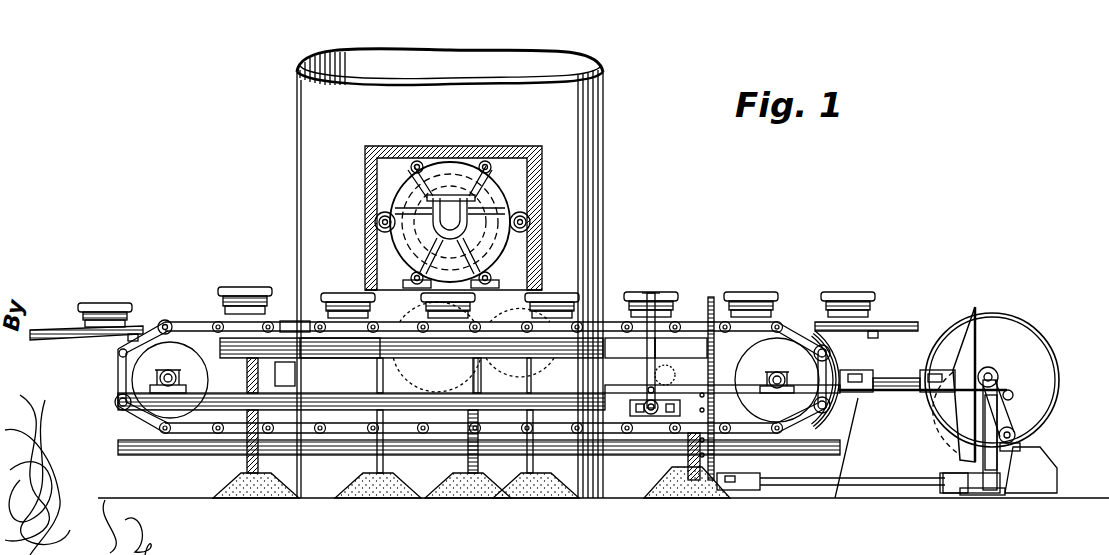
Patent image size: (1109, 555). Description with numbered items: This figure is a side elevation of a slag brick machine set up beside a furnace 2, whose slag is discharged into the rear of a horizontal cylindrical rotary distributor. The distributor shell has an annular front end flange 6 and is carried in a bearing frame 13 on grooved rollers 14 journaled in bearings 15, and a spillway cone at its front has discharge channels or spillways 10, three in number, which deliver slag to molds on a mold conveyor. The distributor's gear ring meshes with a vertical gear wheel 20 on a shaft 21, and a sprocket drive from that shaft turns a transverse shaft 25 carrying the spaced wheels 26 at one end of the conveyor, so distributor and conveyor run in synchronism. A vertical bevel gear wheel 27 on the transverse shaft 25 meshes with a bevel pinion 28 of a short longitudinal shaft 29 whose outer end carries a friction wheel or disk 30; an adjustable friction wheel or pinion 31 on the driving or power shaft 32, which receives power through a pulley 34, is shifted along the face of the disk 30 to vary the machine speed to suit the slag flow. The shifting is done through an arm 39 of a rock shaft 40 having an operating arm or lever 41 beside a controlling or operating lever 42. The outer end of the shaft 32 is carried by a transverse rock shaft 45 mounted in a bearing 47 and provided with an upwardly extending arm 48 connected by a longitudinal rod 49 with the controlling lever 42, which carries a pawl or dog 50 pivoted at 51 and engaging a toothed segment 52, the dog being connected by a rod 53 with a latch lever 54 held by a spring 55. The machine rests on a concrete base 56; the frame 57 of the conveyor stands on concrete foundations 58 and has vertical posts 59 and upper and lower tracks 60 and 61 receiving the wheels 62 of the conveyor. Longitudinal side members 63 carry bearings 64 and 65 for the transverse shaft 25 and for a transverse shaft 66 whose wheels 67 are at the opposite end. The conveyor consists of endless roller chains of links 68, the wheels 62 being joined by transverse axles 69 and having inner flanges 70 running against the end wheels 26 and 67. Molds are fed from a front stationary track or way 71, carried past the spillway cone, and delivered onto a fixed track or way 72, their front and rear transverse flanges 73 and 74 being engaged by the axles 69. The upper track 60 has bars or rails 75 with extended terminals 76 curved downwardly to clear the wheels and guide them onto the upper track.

The furnace 2 is at (603, 140).
The annular front end flange 6 is at (498, 201).
The discharge channels or spillways 10 is at (410, 200).
The bearing frame 13 is at (540, 243).
The grooved rollers 14 is at (395, 210).
The bearings 15 is at (378, 248).
The vertical gear wheel 20 is at (530, 368).
The shaft 21 is at (450, 352).
The transverse shaft 25 is at (815, 362).
The spaced wheels 26 is at (777, 380).
The vertical bevel gear wheel 27 is at (842, 370).
The bevel pinion 28 is at (918, 372).
The short longitudinal shaft 29 is at (912, 392).
The friction wheel or disk 30 is at (978, 318).
The adjustable friction wheel or pinion 31 is at (990, 367).
The driving or power shaft 32 is at (1010, 390).
The pulley 34 is at (1040, 328).
The arm 39 is at (997, 480).
The rock shaft 40 is at (885, 470).
The operating arm or lever 41 is at (704, 312).
The controlling or operating lever 42 is at (630, 349).
The transverse rock shaft 45 is at (1010, 447).
The bearing 47 is at (1012, 428).
The upwardly extending arm 48 is at (1010, 400).
The longitudinal rod 49 is at (857, 447).
The pawl or dog 50 is at (674, 375).
The pivot 51 is at (648, 372).
The toothed segment 52 is at (644, 395).
The rod 53 is at (655, 348).
The latch lever 54 is at (655, 300).
The spring 55 is at (648, 300).
The concrete base 56 is at (857, 467).
The frame 57 is at (478, 488).
The concrete foundations 58 is at (384, 490).
The vertical posts 59 is at (247, 465).
The upper track 60 is at (338, 350).
The lower track 61 is at (350, 455).
The wheels 62 is at (216, 322).
The longitudinal side members 63 is at (130, 417).
The bearing 64 is at (170, 380).
The bearing 65 is at (777, 372).
The transverse shaft 66 is at (479, 399).
The wheels 67 is at (198, 378).
The links 68 is at (291, 322).
The transverse axles 69 is at (165, 320).
The flanges 70 is at (120, 358).
The front stationary track or way 71 is at (38, 338).
The fixed track or way 72 is at (905, 322).
The front transverse flange 73 is at (90, 340).
The rear transverse flange 74 is at (125, 341).
The bars or rails 75 is at (275, 375).
The extended terminals 76 is at (222, 348).